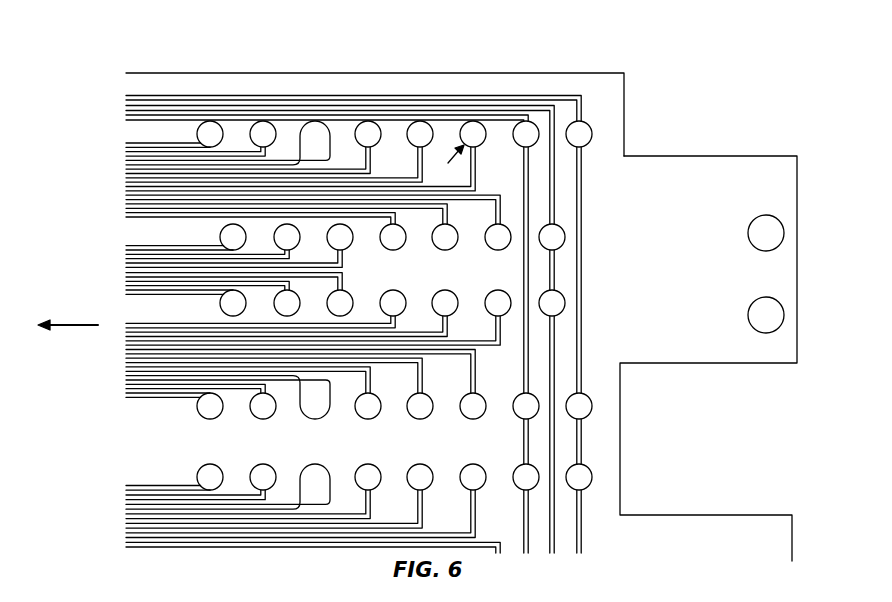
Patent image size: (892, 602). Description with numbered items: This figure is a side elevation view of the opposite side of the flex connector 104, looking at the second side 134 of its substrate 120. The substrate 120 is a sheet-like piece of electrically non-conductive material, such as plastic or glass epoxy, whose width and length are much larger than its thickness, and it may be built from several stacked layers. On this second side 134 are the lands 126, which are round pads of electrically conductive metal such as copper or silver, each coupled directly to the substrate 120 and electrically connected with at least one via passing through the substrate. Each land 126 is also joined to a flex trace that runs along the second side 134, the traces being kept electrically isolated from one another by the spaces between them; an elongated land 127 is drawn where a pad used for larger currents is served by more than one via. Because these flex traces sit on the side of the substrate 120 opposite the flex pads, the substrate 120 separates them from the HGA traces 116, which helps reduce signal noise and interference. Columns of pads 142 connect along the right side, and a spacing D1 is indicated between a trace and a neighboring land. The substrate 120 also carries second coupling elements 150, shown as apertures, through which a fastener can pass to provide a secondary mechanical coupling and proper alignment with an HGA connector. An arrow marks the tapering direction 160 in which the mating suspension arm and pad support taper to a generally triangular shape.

The flex connector 104 is at (625, 93).
The HGA traces 116 is at (186, 146).
The substrate 120 is at (440, 72).
The lands 126 is at (212, 133).
The elongated contact pad 127 is at (320, 133).
The second side 134 is at (576, 82).
The bus pads 142 is at (569, 238).
The second coupling elements 150 is at (773, 221).
The tapering direction 160 is at (72, 324).
The distance D1 is at (497, 112).